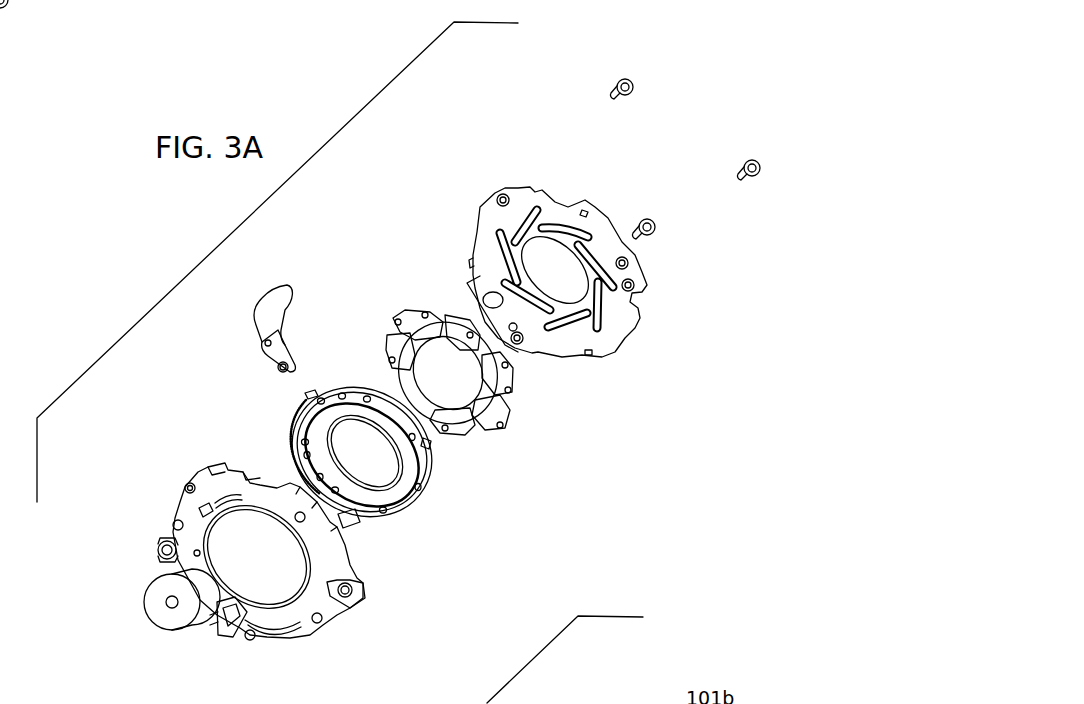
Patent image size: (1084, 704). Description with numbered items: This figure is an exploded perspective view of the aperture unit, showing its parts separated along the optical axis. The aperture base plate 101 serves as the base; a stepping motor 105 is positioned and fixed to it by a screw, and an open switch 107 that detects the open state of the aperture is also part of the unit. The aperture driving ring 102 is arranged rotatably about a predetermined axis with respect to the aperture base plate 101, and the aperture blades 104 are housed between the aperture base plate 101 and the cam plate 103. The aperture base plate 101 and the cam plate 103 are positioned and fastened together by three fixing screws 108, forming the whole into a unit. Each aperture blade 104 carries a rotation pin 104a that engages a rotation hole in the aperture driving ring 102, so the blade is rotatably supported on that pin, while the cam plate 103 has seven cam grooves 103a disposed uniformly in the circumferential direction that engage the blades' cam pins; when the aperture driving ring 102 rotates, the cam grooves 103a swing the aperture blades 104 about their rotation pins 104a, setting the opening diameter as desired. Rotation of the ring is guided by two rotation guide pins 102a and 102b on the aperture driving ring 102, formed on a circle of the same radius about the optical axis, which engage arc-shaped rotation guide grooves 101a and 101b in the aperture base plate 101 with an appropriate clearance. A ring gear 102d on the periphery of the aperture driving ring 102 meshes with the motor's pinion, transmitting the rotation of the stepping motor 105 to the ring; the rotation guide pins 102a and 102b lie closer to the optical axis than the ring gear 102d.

The aperture base plate 101 is at (330, 635).
The rotation guide groove 101a is at (197, 565).
The rotation guide groove 101b is at (208, 504).
The aperture driving ring 102 is at (415, 510).
The rotation guide pin 102a is at (304, 446).
The rotation guide pin 102b is at (340, 397).
The ring gear 102d is at (293, 415).
The cam plate 103 is at (612, 355).
The cam groove 103a is at (538, 313).
The aperture blade 104 is at (265, 296).
The rotation pin 104a is at (280, 366).
The stepping motor 105 is at (150, 610).
The open switch 107 is at (213, 637).
The fixing screw 108 is at (657, 223).